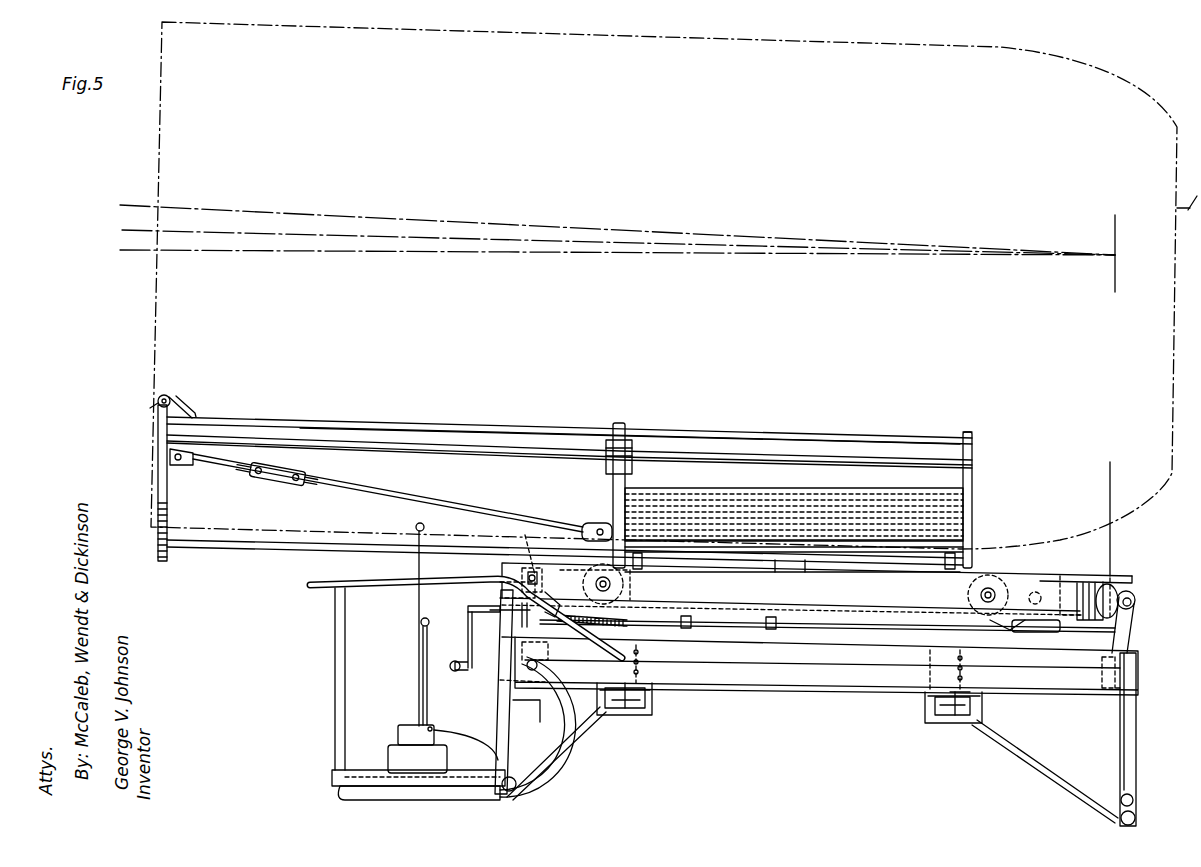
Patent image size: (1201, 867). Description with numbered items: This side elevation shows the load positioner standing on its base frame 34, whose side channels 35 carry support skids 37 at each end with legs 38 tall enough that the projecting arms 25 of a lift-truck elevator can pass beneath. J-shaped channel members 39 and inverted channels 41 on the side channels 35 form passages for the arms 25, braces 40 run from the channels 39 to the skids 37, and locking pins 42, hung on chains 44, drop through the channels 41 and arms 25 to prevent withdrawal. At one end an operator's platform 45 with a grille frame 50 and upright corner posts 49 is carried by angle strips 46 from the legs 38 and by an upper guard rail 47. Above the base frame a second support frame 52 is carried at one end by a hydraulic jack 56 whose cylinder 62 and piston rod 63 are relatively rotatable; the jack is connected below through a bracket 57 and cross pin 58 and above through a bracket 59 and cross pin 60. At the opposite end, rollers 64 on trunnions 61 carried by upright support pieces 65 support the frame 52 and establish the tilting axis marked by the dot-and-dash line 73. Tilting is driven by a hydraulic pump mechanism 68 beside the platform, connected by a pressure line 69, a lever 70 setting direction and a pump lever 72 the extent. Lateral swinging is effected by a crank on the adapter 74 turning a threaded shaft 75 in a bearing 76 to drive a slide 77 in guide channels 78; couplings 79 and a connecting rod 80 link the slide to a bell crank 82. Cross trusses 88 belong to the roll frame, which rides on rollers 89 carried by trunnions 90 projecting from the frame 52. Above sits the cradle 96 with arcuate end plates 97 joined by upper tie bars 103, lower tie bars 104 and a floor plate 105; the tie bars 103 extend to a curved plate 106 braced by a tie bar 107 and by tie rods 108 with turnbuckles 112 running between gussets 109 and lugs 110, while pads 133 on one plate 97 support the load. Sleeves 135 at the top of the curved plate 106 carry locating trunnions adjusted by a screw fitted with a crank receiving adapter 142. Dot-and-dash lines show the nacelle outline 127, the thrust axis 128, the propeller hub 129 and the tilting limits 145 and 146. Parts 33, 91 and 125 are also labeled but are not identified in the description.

The projecting arms 25 is at (636, 720).
The rack side 33 is at (984, 467).
The base frame 34 is at (842, 692).
The side channels 35 is at (775, 673).
The support skids 37 is at (516, 790).
The legs 38 is at (512, 720).
The J-shaped channel members 39 is at (653, 712).
The braces 40 is at (565, 745).
The inverted channels 41 is at (652, 690).
The locking pins 42 is at (616, 718).
The chains 44 is at (640, 675).
The operator's platform 45 is at (338, 793).
The angle strips 46 is at (368, 783).
The guard rail 47 is at (312, 590).
The upright corner posts 49 is at (355, 692).
The grille frame 50 is at (331, 774).
The second support frame 52 is at (1080, 575).
The hydraulic jack 56 is at (556, 617).
The bracket 57 is at (540, 680).
The cross pin 58 is at (502, 688).
The bracket 59 is at (544, 577).
The cross pin 60 is at (517, 546).
The trunnion 61 is at (1131, 600).
The cylinder 62 is at (563, 652).
The piston rod 63 is at (500, 582).
The rollers 64 is at (1134, 608).
The upright support piece 65 is at (1130, 635).
The hydraulic pump mechanism 68 is at (430, 760).
The pressure line 69 is at (560, 690).
The lever 70 is at (431, 622).
The pump lever 72 is at (417, 560).
The dot-and-dash line 73 is at (1132, 578).
The adapter 74 is at (480, 606).
The threaded shaft 75 is at (592, 628).
The bearing 76 is at (475, 645).
The slide 77 is at (728, 618).
The guide channels 78 is at (685, 616).
The couplings 79 is at (1028, 602).
The connecting rod 80 is at (922, 618).
The bell crank 82 is at (1047, 634).
The cross trusses 88 is at (642, 560).
The rollers 89 is at (612, 577).
The trunnions 90 is at (612, 590).
The hanger pin 91 is at (925, 697).
The cradle 96 is at (920, 438).
The end plates 97 is at (613, 490).
The tie bars 103 is at (785, 441).
The tie bars 104 is at (968, 541).
The floor plate 105 is at (808, 494).
The curved plate 106 is at (168, 520).
The tie bar 107 is at (318, 552).
The tie rods 108 is at (455, 506).
The gussets 109 is at (172, 468).
The lugs 110 is at (585, 524).
The turnbuckles 112 is at (290, 472).
The cross member 125 is at (806, 567).
The nacelle outline 127 is at (1118, 80).
The thrust axis 128 is at (426, 232).
The propeller hub 129 is at (1194, 192).
The pads 133 is at (634, 471).
The sleeves 135 is at (170, 398).
The crank receiving adapter 142 is at (155, 408).
The dot-and-dash line 145 is at (185, 253).
The dot-and-dash line 146 is at (210, 207).